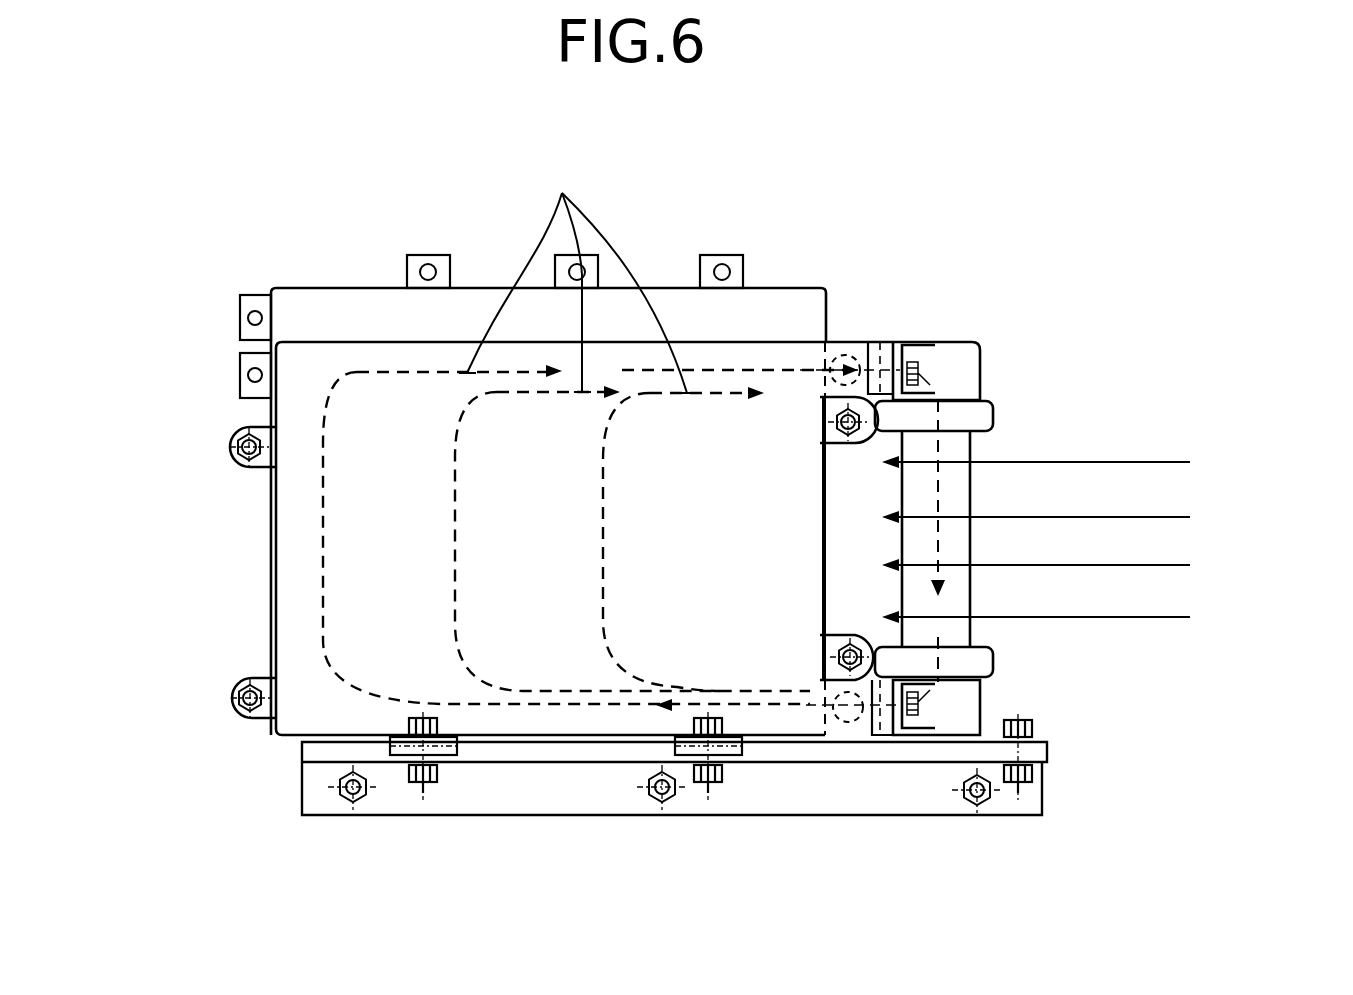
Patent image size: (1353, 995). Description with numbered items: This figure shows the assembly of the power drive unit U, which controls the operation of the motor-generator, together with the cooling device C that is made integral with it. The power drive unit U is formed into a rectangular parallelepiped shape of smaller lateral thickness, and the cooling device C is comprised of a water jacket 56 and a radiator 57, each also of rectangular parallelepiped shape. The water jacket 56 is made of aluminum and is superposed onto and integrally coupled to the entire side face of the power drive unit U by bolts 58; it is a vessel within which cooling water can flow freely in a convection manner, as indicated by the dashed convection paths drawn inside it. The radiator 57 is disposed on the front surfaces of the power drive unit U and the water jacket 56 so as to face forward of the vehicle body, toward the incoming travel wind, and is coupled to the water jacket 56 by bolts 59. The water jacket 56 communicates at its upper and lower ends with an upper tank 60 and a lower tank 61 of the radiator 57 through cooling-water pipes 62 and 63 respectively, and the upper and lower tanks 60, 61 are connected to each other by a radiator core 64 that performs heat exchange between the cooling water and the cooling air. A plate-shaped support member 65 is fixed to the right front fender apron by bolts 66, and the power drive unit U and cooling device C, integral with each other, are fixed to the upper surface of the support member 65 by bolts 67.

The power drive unit U is at (352, 307).
The cooling device C is at (893, 200).
The water jacket 56 is at (745, 340).
The radiator 57 is at (925, 335).
The bolts 58 is at (240, 460).
The bolts 59 is at (935, 352).
The upper tank 60 is at (967, 374).
The lower tank 61 is at (965, 702).
The cooling-water pipe 62 is at (882, 443).
The cooling-water pipe 63 is at (874, 636).
The radiator core 64 is at (960, 448).
The support member 65 is at (798, 795).
The bolts 66 is at (356, 795).
The bolts 67 is at (422, 718).